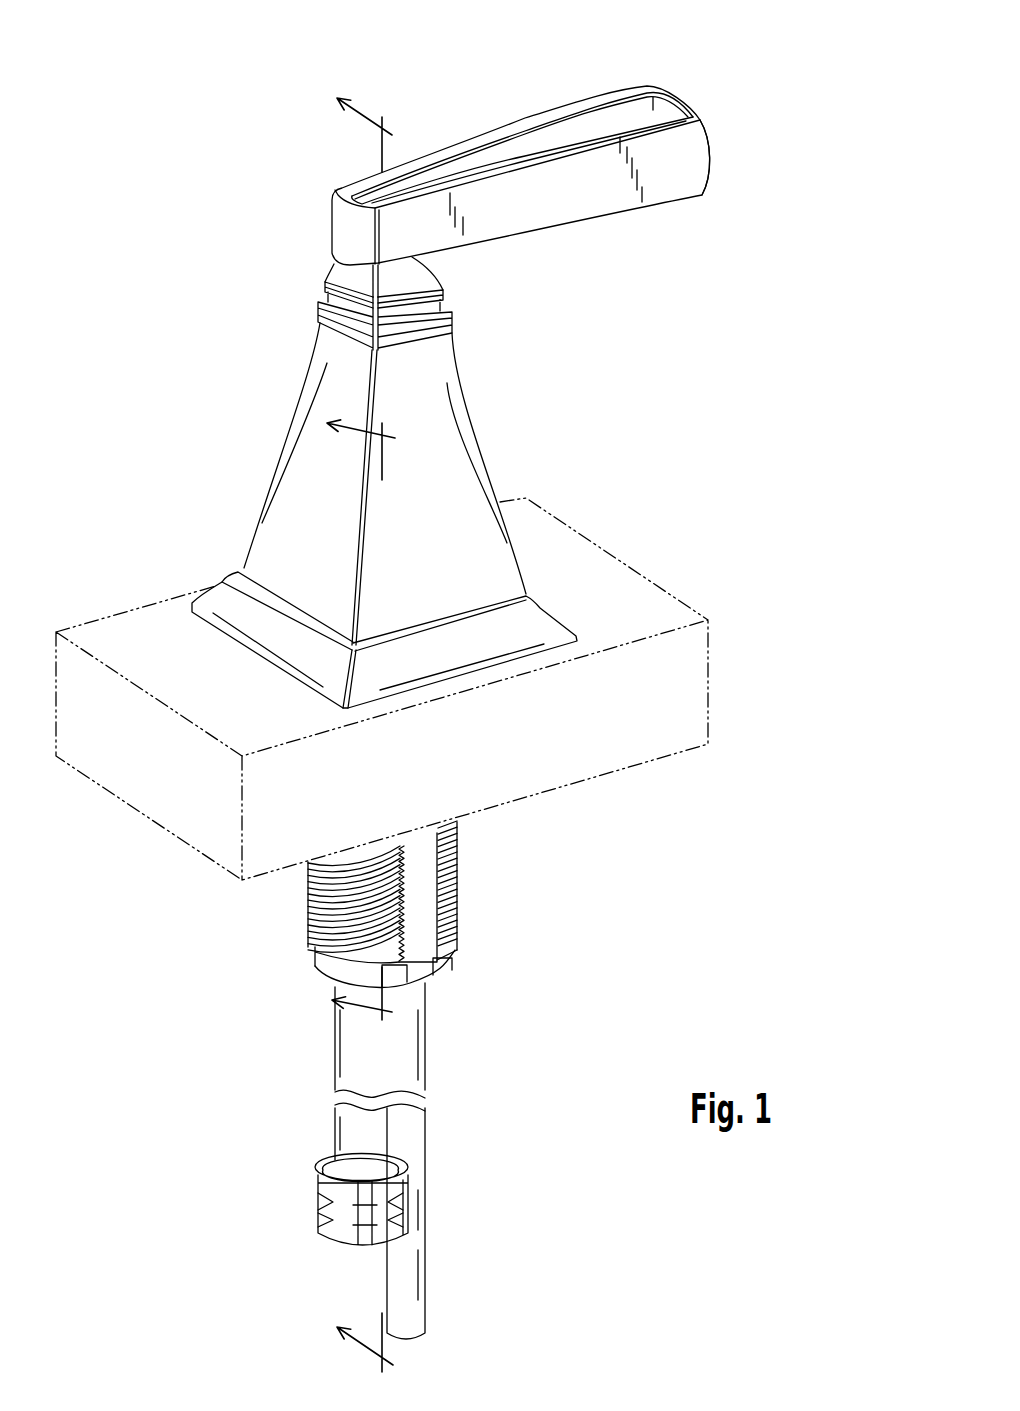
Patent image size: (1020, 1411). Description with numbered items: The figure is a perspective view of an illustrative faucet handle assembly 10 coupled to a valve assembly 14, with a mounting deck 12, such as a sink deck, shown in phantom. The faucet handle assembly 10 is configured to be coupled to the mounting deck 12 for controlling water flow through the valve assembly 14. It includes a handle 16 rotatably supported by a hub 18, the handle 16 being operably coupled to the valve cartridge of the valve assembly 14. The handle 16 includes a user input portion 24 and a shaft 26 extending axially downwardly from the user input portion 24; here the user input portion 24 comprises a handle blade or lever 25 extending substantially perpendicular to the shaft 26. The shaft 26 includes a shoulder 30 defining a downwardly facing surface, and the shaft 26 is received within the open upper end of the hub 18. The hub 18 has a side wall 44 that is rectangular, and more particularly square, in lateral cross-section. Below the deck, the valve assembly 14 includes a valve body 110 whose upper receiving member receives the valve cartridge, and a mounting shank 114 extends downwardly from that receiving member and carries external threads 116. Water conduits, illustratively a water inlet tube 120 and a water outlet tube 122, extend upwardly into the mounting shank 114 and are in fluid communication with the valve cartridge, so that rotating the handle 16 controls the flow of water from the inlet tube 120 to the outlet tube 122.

The faucet handle assembly 10 is at (131, 161).
The mounting deck 12 is at (628, 587).
The valve assembly 14 is at (376, 1080).
The handle 16 is at (577, 155).
The hub 18 is at (372, 495).
The user input portion 24 is at (655, 93).
The handle blade or lever 25 is at (713, 147).
The shaft 26 is at (427, 270).
The shoulder 30 is at (320, 305).
The side wall 44 is at (268, 473).
The valve body 110 is at (458, 935).
The mounting shank 114 is at (322, 963).
The external threads 116 is at (463, 843).
The water inlet tube 120 is at (337, 1118).
The water outlet tube 122 is at (407, 1280).